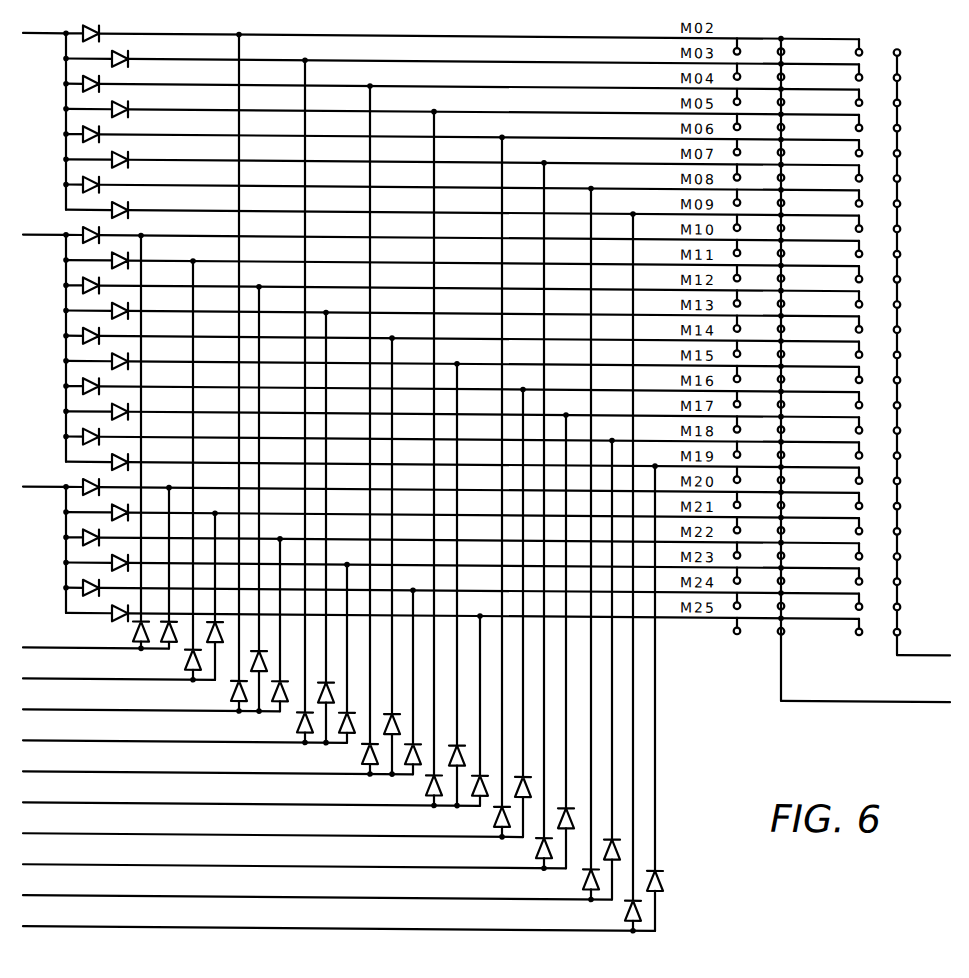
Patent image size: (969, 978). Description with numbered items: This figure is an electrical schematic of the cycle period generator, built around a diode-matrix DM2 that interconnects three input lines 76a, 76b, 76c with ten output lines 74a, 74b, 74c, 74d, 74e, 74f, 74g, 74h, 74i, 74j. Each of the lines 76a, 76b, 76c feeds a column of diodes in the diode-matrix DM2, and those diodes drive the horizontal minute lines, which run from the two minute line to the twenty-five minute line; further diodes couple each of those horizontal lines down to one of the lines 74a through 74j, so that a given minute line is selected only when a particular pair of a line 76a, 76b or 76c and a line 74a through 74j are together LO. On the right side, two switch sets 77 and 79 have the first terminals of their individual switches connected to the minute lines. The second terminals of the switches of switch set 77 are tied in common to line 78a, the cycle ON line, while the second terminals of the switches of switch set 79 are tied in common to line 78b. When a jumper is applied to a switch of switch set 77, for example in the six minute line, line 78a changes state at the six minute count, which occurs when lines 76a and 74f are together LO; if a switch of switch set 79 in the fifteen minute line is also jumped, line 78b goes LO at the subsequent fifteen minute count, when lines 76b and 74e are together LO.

The line 76a is at (48, 32).
The line 76b is at (48, 234).
The line 76c is at (47, 485).
The diode-matrix DM2 is at (131, 51).
The switch set 77 is at (756, 23).
The line 78a is at (849, 696).
The line 78b is at (930, 653).
The switch set 79 is at (873, 25).
The line 74a is at (45, 634).
The line 74b is at (61, 678).
The line 74c is at (101, 710).
The line 74d is at (133, 740).
The line 74e is at (168, 771).
The line 74f is at (207, 802).
The line 74g is at (245, 833).
The line 74h is at (281, 864).
The line 74i is at (317, 895).
The line 74j is at (355, 926).